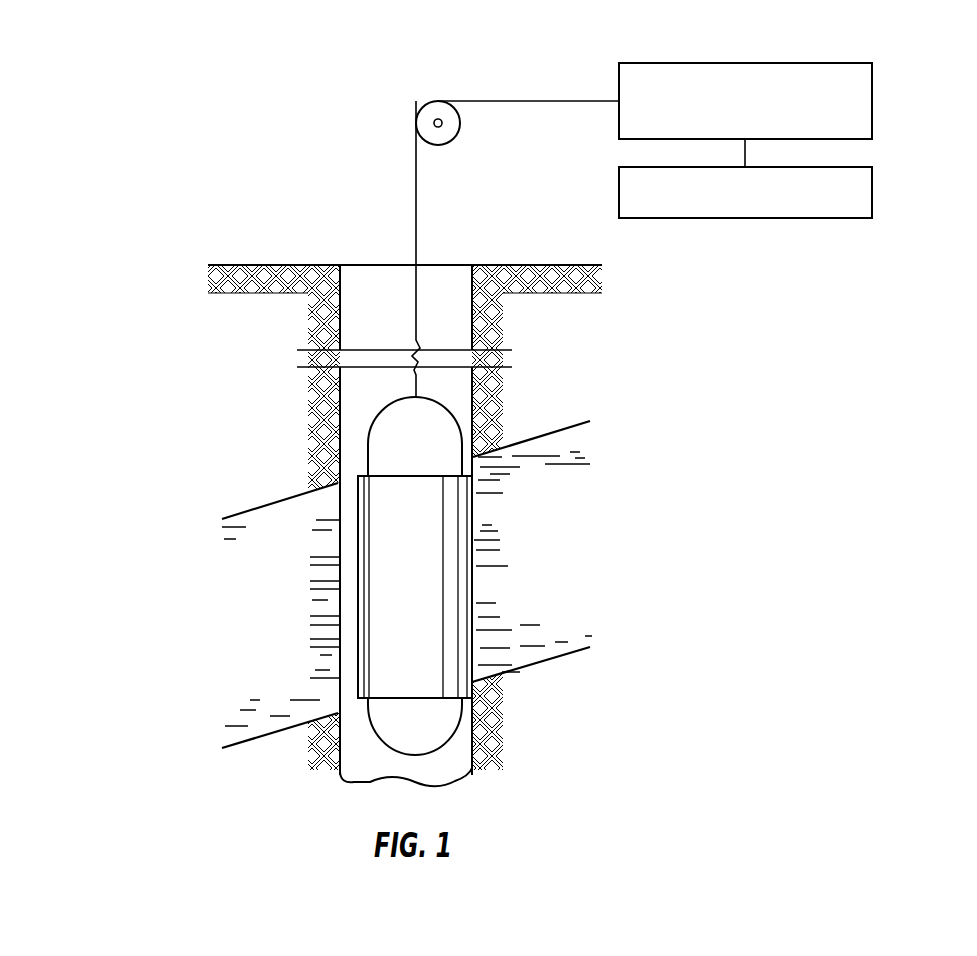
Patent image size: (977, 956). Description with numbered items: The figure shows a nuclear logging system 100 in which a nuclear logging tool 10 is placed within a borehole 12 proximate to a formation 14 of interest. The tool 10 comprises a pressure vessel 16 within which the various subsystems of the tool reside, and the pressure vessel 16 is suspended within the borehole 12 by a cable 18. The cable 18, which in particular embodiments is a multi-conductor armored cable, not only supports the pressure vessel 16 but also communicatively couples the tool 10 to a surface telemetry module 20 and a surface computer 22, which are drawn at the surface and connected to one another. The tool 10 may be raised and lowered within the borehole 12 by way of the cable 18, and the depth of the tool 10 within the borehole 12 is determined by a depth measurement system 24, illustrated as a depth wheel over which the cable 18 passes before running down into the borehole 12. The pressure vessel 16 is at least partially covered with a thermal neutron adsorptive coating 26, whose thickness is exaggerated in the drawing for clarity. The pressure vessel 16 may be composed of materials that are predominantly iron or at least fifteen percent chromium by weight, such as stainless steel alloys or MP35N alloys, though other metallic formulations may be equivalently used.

The nuclear logging system 100 is at (292, 147).
The nuclear logging tool 10 is at (357, 417).
The borehole 12 is at (364, 306).
The formation 14 is at (532, 553).
The pressure vessel 16 is at (400, 455).
The cable 18 is at (416, 205).
The surface telemetry module 20 is at (872, 91).
The surface computer 22 is at (872, 193).
The depth measurement system 24 is at (454, 140).
The thermal neutron adsorptive coating 26 is at (385, 687).